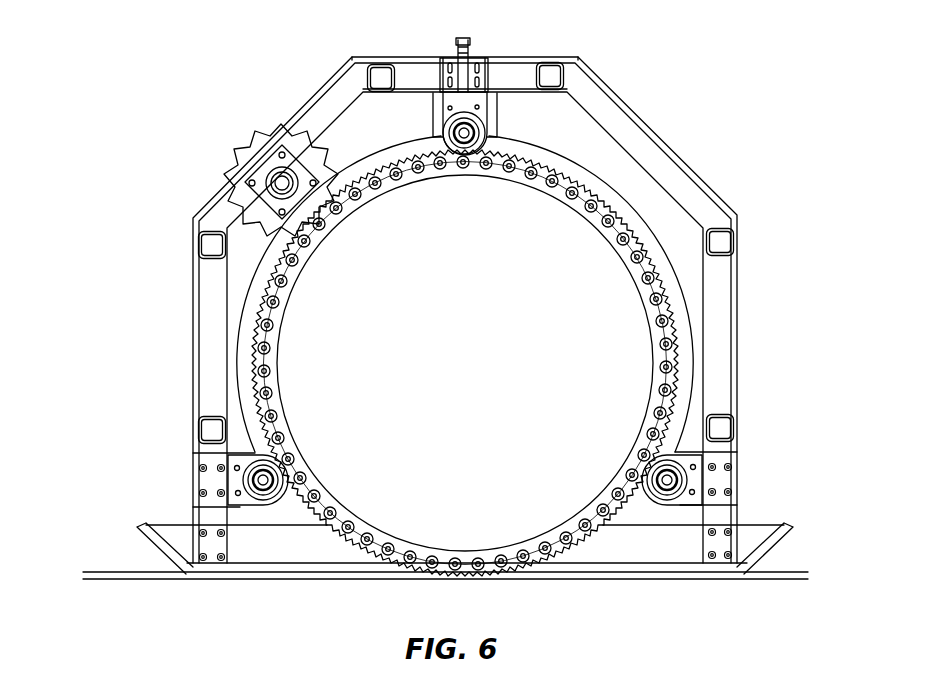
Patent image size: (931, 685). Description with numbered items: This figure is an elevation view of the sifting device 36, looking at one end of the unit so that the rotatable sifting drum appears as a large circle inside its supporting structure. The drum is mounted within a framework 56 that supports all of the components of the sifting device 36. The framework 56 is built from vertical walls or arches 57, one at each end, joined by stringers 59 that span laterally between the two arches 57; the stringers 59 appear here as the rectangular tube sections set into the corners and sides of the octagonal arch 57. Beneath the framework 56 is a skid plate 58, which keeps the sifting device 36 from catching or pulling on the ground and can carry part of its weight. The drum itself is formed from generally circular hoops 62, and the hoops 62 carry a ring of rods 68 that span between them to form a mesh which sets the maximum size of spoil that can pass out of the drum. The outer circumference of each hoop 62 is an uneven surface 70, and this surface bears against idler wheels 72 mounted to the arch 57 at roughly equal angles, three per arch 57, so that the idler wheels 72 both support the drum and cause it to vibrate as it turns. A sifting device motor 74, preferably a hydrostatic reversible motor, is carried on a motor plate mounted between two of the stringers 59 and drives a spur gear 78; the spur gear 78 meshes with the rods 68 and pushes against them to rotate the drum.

The sifting device 36 is at (218, 106).
The framework 56 is at (658, 201).
The arch 57 is at (637, 137).
The skid plate 58 is at (137, 529).
The stringer 59 is at (368, 65).
The hoop 62 is at (597, 218).
The rod 68 is at (535, 172).
The uneven surface 70 is at (588, 187).
The idler wheel 72 is at (472, 131).
The sifting device motor 74 is at (310, 156).
The spur gear 78 is at (261, 127).